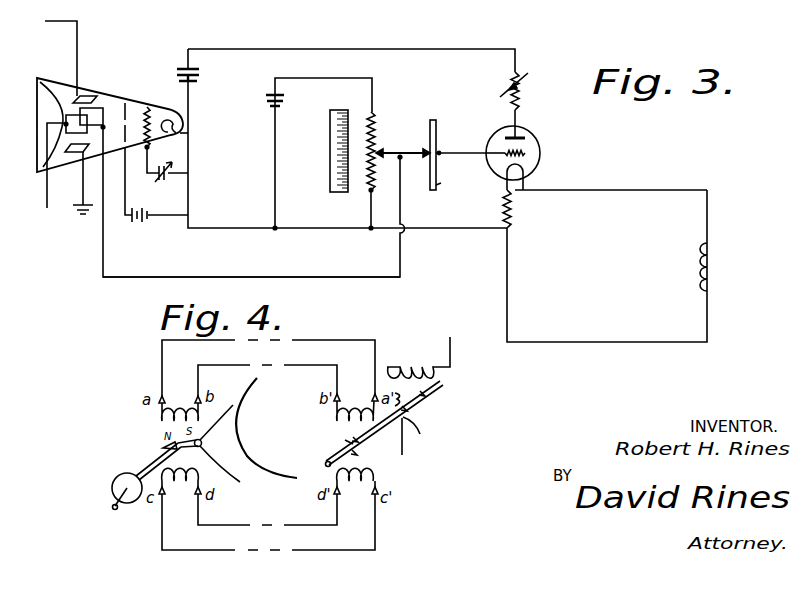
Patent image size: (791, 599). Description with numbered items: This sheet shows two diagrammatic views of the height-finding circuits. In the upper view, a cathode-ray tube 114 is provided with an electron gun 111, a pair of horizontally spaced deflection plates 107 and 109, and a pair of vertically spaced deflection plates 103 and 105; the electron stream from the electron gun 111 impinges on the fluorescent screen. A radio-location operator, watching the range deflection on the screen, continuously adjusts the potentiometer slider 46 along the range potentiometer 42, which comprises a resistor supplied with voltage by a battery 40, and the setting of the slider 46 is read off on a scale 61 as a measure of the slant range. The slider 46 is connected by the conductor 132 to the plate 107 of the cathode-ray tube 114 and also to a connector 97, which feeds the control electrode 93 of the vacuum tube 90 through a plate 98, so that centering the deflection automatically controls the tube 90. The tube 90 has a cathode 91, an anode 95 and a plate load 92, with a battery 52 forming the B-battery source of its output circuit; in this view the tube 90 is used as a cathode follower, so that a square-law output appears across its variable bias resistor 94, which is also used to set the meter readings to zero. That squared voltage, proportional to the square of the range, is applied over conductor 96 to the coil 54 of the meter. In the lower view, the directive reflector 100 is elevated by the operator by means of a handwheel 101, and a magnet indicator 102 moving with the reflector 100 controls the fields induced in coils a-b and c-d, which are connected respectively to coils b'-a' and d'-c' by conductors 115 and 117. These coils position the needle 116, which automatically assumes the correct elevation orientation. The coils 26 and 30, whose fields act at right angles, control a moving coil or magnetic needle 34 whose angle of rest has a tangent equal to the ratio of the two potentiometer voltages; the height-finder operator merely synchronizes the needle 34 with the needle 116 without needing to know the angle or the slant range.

In FIG. 3, the battery 40 is at (285, 93).
In FIG. 3, the range potentiometer 42 is at (376, 136).
In FIG. 3, the potentiometer slider 46 is at (397, 160).
In FIG. 3, the battery 52 is at (179, 72).
In FIG. 3, the coil 54 is at (713, 265).
In FIG. 3, the scale 61 is at (330, 157).
In FIG. 3, the vacuum tube 90 is at (541, 165).
In FIG. 3, the cathode 91 is at (523, 181).
In FIG. 3, the plate load 92 is at (530, 91).
In FIG. 3, the control electrode 93 is at (522, 150).
In FIG. 3, the bias resistor 94 is at (503, 207).
In FIG. 3, the anode 95 is at (500, 90).
In FIG. 3, the output circuit conductor 96 is at (613, 191).
In FIG. 3, the connector 97 is at (441, 183).
In FIG. 3, the plate electrode 98 is at (455, 152).
In FIG. 3, the vertically spaced deflection plate 103 is at (84, 95).
In FIG. 3, the vertically spaced deflection plate 105 is at (73, 155).
In FIG. 3, the horizontally spaced deflection plate 107 is at (97, 110).
In FIG. 3, the horizontally spaced deflection plate 109 is at (72, 114).
In FIG. 3, the electron gun 111 is at (167, 110).
In FIG. 3, the cathode-ray tube 114 is at (117, 107).
In FIG. 3, the conductor 132 is at (200, 276).
In FIG. 4, the coil 26 is at (420, 361).
In FIG. 4, the coil 30 is at (419, 437).
In FIG. 4, the needle 34 is at (427, 403).
In FIG. 4, the directive reflector 100 is at (253, 379).
In FIG. 4, the handwheel 101 is at (115, 481).
In FIG. 4, the magnet indicator 102 is at (236, 473).
In FIG. 4, the conductors 115 is at (273, 352).
In FIG. 4, the needle 116 is at (332, 439).
In FIG. 4, the conductors 117 is at (268, 538).